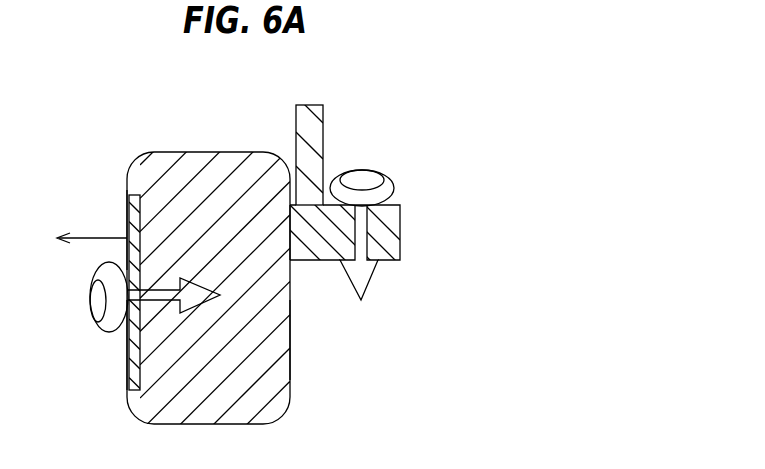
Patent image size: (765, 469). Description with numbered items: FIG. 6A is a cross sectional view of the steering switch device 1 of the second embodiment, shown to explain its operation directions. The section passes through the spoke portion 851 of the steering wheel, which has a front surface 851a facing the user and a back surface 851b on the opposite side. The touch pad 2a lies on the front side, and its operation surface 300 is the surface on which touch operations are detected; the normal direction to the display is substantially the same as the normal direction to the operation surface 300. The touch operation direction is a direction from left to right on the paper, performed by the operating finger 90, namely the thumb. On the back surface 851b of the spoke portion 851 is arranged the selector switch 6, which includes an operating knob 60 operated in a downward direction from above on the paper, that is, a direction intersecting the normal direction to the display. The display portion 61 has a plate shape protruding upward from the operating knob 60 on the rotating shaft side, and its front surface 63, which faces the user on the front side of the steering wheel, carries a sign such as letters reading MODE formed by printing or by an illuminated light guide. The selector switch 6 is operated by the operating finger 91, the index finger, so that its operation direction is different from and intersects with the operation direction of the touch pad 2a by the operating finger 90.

The steering switch device 1 is at (388, 107).
The touch pad 2a is at (130, 212).
The selector switch 6 is at (293, 206).
The operating knob 60 is at (312, 238).
The display portion 61 is at (303, 160).
The front surface 63 is at (310, 162).
The operating finger 90 is at (107, 312).
The operating finger 91 is at (380, 188).
The operation surface 300 is at (127, 367).
The spoke portion 851 is at (162, 165).
The front surface 851a is at (127, 188).
The back surface 851b is at (288, 368).